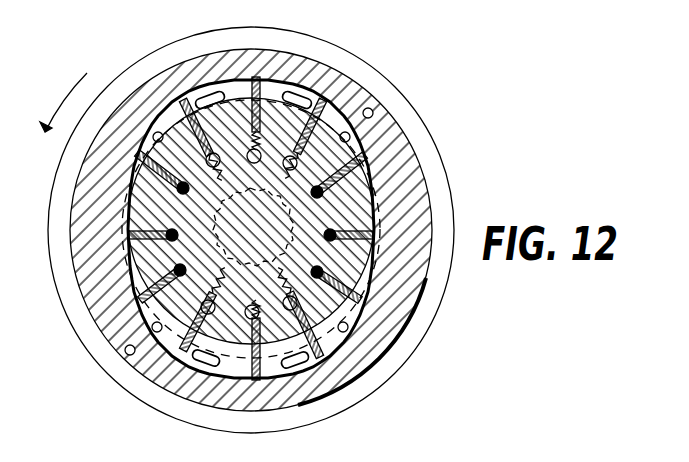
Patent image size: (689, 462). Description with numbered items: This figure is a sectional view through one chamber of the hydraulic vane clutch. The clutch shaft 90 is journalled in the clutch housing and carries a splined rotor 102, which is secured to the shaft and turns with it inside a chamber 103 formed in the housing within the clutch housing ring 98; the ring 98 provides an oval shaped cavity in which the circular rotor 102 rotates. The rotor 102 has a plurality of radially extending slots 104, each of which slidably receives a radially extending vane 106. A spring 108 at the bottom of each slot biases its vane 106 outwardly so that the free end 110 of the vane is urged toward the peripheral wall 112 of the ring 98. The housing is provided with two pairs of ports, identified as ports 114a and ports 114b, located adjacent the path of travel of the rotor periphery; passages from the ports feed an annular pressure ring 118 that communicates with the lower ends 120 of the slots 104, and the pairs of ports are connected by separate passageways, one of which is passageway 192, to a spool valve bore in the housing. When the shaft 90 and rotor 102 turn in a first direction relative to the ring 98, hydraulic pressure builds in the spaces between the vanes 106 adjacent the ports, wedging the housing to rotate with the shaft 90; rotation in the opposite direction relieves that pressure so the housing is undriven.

The clutch shaft 90 is at (178, 208).
The clutch housing ring 98 is at (400, 310).
The rotor 102 is at (378, 195).
The chamber 103 is at (273, 367).
The slot 104 is at (300, 160).
The vane 106 is at (350, 80).
The spring 108 is at (276, 298).
The free end 110 is at (255, 76).
The peripheral wall 112 is at (240, 67).
The port 114a is at (167, 117).
The port 114b is at (350, 127).
The annular pressure ring 118 is at (405, 232).
The lower end 120 is at (178, 264).
The passageway 192 is at (140, 148).